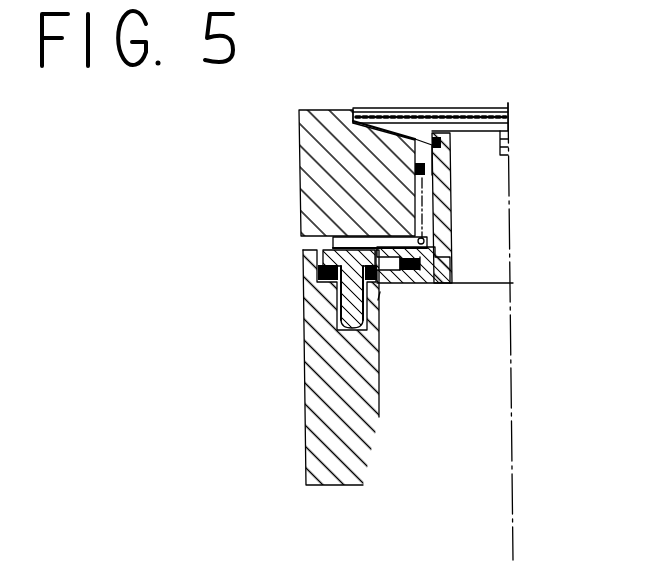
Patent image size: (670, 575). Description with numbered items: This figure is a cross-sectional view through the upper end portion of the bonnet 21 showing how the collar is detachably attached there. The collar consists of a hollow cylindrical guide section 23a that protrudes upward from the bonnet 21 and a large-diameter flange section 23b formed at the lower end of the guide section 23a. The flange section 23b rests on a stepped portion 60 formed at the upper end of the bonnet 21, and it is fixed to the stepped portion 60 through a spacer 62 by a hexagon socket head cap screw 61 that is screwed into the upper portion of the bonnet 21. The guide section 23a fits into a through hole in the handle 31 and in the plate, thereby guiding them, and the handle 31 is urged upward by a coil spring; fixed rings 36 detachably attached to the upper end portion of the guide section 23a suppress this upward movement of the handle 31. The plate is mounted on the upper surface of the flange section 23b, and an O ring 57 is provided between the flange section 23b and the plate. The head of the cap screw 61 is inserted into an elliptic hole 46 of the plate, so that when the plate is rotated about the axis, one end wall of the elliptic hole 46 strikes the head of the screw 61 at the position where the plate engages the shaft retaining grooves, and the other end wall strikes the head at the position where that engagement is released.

The bonnet 21 is at (320, 408).
The handle 31 is at (357, 162).
The fixed rings 36 is at (431, 133).
The elliptic hole 46 is at (336, 231).
The hexagon socket head cap screw 61 is at (338, 296).
The spacer 62 is at (303, 278).
The guide section 23a is at (448, 176).
The large-diameter flange section 23b is at (438, 274).
The O ring 57 is at (412, 284).
The stepped portion 60 is at (380, 296).